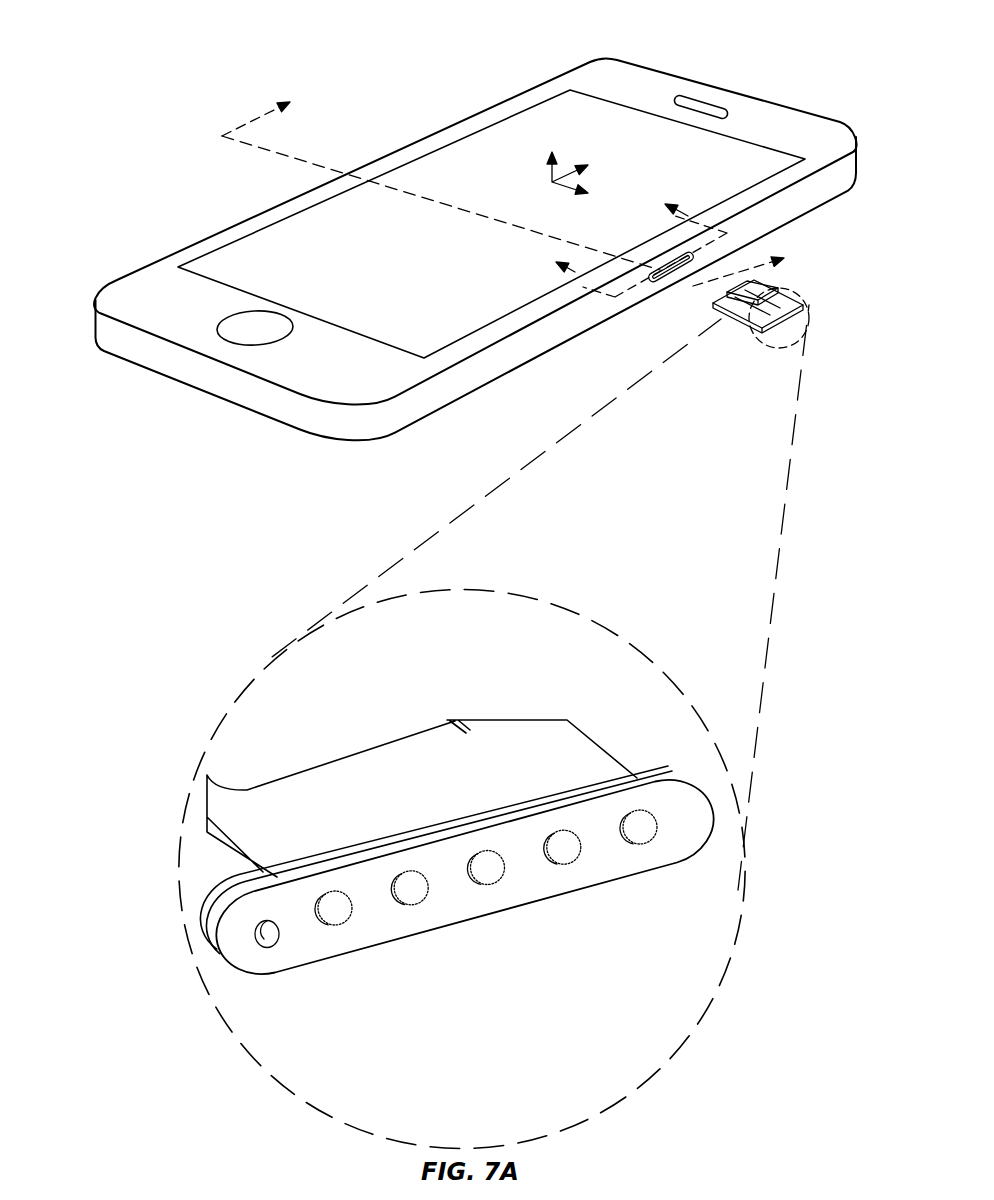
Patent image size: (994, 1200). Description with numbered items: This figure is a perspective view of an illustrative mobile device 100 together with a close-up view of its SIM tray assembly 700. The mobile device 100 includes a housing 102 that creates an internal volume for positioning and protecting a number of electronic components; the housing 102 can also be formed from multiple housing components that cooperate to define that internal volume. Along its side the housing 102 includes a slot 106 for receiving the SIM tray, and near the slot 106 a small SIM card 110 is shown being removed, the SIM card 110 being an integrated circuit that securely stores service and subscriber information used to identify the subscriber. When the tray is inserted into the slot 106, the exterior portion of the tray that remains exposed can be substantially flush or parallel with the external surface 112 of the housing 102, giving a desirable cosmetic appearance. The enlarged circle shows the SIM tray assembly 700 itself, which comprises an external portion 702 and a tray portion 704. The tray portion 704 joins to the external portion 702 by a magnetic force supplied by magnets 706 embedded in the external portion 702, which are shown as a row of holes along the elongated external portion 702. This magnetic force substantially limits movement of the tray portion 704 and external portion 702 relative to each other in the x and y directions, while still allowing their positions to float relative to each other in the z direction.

The mobile device 100 is at (447, 58).
The housing 102 is at (275, 207).
The slot 106 is at (654, 288).
The SIM card 110 is at (749, 305).
The external surface 112 is at (706, 256).
The SIM tray assembly 700 is at (785, 318).
The external portion 702 is at (665, 773).
The tray portion 704 is at (505, 813).
The magnets 706 is at (423, 900).